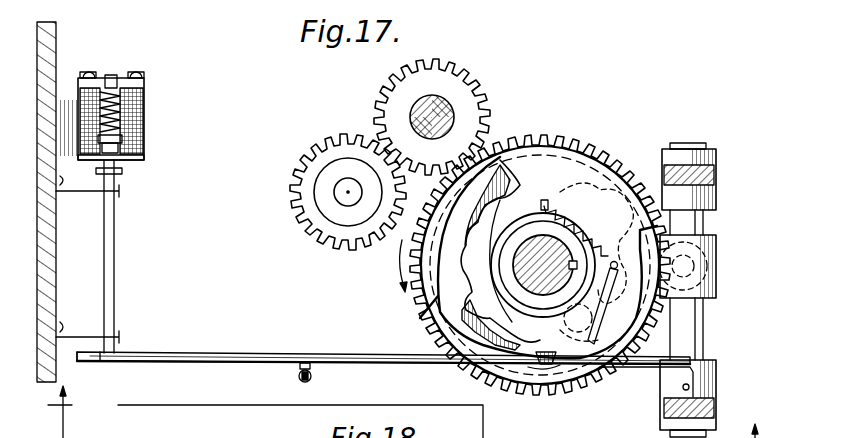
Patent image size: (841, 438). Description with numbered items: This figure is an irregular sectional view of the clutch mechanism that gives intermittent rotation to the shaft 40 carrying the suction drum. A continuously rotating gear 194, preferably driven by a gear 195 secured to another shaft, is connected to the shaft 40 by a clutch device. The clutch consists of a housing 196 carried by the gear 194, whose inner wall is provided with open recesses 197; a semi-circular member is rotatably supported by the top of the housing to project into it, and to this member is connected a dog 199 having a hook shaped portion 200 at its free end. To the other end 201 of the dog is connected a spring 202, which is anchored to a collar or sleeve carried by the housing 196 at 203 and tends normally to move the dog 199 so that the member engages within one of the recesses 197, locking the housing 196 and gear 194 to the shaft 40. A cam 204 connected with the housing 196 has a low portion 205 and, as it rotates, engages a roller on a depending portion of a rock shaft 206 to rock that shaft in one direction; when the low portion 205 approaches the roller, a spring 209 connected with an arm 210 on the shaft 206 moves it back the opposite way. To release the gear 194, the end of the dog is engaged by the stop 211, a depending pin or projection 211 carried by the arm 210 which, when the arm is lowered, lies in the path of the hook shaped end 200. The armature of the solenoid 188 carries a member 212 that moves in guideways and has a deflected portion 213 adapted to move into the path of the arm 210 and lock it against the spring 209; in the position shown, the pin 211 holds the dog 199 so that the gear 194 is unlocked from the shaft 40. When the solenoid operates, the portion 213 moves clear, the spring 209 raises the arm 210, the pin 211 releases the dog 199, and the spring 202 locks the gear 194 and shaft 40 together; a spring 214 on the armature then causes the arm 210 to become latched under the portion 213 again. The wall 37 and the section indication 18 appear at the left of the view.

The section line 18 is at (265, 412).
The wall 37 is at (38, 386).
The shaft 40 is at (550, 256).
The electro-responsive device 188 is at (134, 130).
The continuously rotating gear 194 is at (478, 368).
The gear 195 is at (347, 192).
The housing 196 is at (536, 127).
The open recesses 197 is at (445, 322).
The dog 199 is at (582, 305).
The hook shaped portion 200 is at (540, 277).
The other end of the dog 201 is at (566, 271).
The spring 202 is at (612, 230).
The collar or sleeve anchor 203 is at (549, 202).
The cam 204 is at (588, 178).
The low portion 205 is at (648, 319).
The rock shaft 206 is at (684, 342).
The spring 209 is at (299, 378).
The arm 210 is at (277, 344).
The stop or depending pin 211 is at (652, 394).
The member 212 is at (110, 254).
The deflected portion 213 is at (104, 362).
The spring 214 is at (115, 104).